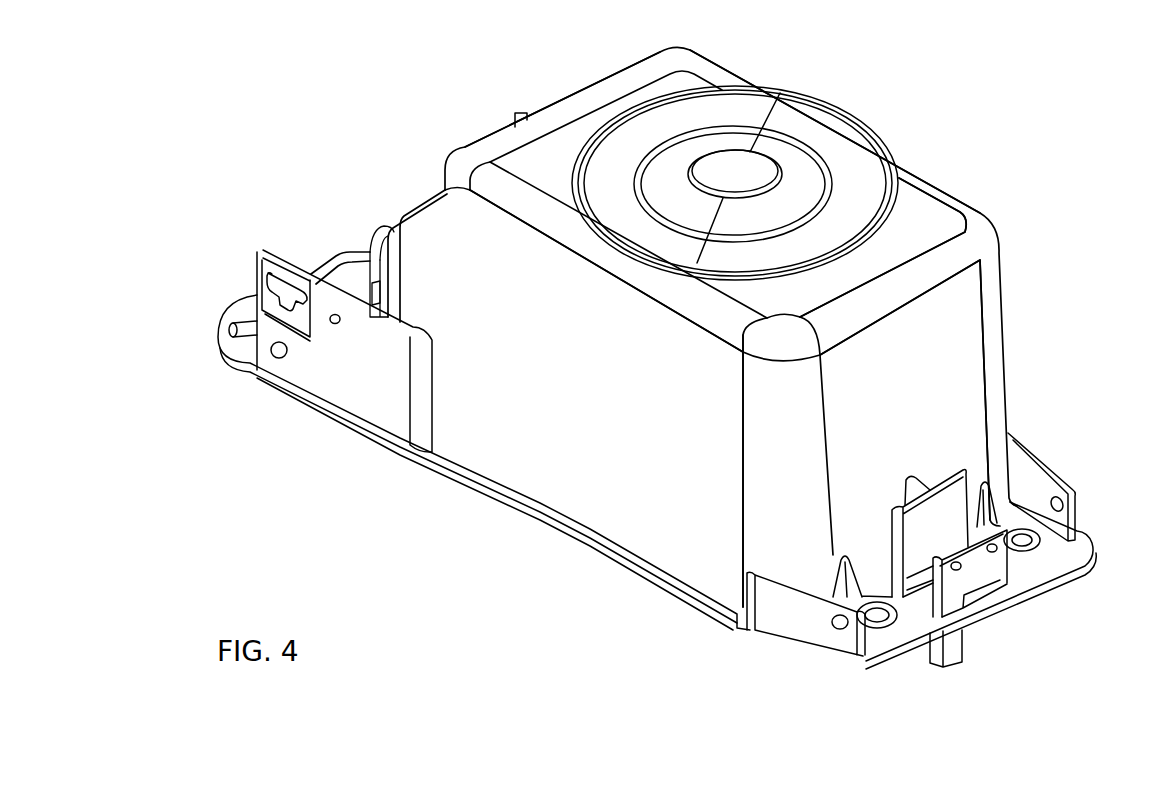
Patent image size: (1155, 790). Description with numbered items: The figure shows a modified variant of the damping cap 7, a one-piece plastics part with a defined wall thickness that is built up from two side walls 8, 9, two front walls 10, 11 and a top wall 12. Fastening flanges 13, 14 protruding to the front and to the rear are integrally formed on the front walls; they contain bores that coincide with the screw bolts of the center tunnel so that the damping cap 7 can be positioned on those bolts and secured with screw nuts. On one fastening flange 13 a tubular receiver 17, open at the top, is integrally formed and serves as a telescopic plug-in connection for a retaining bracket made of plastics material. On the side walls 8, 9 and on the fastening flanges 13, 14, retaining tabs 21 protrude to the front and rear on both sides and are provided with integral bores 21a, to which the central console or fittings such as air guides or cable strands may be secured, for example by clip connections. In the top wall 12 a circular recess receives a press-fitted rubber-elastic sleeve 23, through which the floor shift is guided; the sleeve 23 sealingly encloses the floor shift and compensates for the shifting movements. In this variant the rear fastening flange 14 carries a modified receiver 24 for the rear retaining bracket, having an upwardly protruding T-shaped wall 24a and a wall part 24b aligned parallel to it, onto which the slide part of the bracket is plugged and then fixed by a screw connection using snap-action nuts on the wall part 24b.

The damping cap 7 is at (935, 152).
The side wall 8 is at (543, 382).
The side wall 9 is at (948, 195).
The front wall 10 is at (485, 143).
The front wall 11 is at (890, 375).
The top wall 12 is at (905, 230).
The fastening flange 13 is at (240, 312).
The fastening flange 14 is at (1049, 563).
The tubular receiver 17 is at (377, 251).
The retaining tab 21 is at (519, 111).
The bore 21a is at (283, 357).
The rubber-elastic sleeve 23 is at (848, 196).
The receiver 24 is at (987, 595).
The T-shaped wall 24a is at (933, 485).
The wall part 24b is at (935, 573).